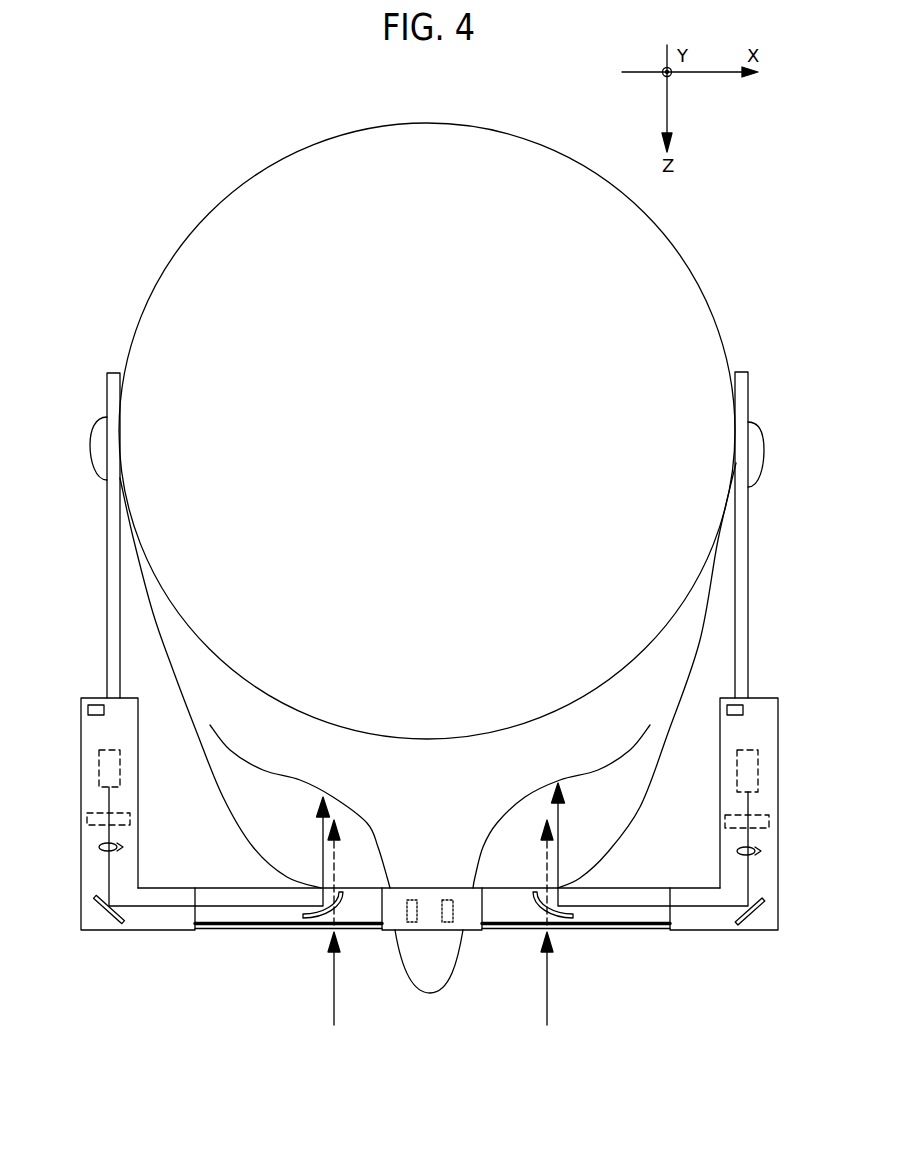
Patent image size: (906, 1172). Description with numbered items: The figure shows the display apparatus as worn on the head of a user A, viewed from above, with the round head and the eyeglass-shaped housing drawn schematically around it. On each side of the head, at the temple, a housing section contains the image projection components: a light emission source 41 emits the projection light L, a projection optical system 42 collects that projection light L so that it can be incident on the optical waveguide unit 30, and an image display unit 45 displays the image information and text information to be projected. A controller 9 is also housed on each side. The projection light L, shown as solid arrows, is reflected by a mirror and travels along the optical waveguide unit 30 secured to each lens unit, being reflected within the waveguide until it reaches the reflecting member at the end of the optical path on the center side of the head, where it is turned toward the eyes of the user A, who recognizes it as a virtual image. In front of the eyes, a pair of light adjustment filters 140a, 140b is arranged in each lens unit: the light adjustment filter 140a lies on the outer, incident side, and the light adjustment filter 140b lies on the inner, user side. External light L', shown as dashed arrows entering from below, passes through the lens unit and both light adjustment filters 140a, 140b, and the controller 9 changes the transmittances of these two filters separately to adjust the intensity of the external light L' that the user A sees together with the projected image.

The controller 9 is at (93, 705).
The optical waveguide unit 30 is at (233, 887).
The light emission source 41 is at (98, 772).
The projection optical system 42 is at (98, 847).
The image display unit 45 is at (87, 822).
The light adjustment filter 140a is at (237, 931).
The light adjustment filter 140b is at (213, 929).
The user A is at (647, 800).
The projection light L is at (428, 844).
The external light L' is at (467, 913).